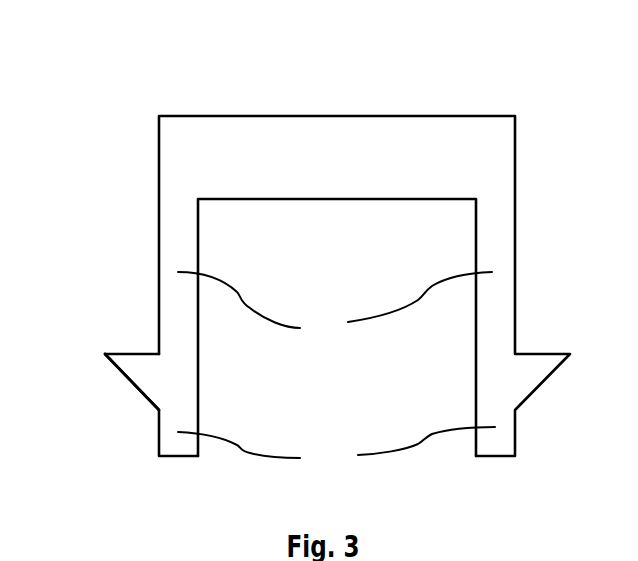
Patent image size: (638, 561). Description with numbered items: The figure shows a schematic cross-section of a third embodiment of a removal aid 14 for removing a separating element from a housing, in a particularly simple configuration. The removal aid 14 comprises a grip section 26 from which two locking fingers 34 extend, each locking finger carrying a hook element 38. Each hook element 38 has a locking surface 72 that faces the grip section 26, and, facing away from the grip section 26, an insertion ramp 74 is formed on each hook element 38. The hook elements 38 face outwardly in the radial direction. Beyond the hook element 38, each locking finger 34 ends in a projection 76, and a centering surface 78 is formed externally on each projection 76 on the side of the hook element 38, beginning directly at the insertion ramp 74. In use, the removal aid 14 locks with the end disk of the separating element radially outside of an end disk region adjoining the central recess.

The removal aid 14 is at (305, 281).
The grip section 26 is at (293, 185).
The locking fingers 34 is at (335, 305).
The hook element 38 is at (137, 373).
The locking surface 72 is at (99, 381).
The insertion ramp 74 is at (138, 393).
The projection 76 is at (336, 448).
The centering surface 78 is at (145, 429).